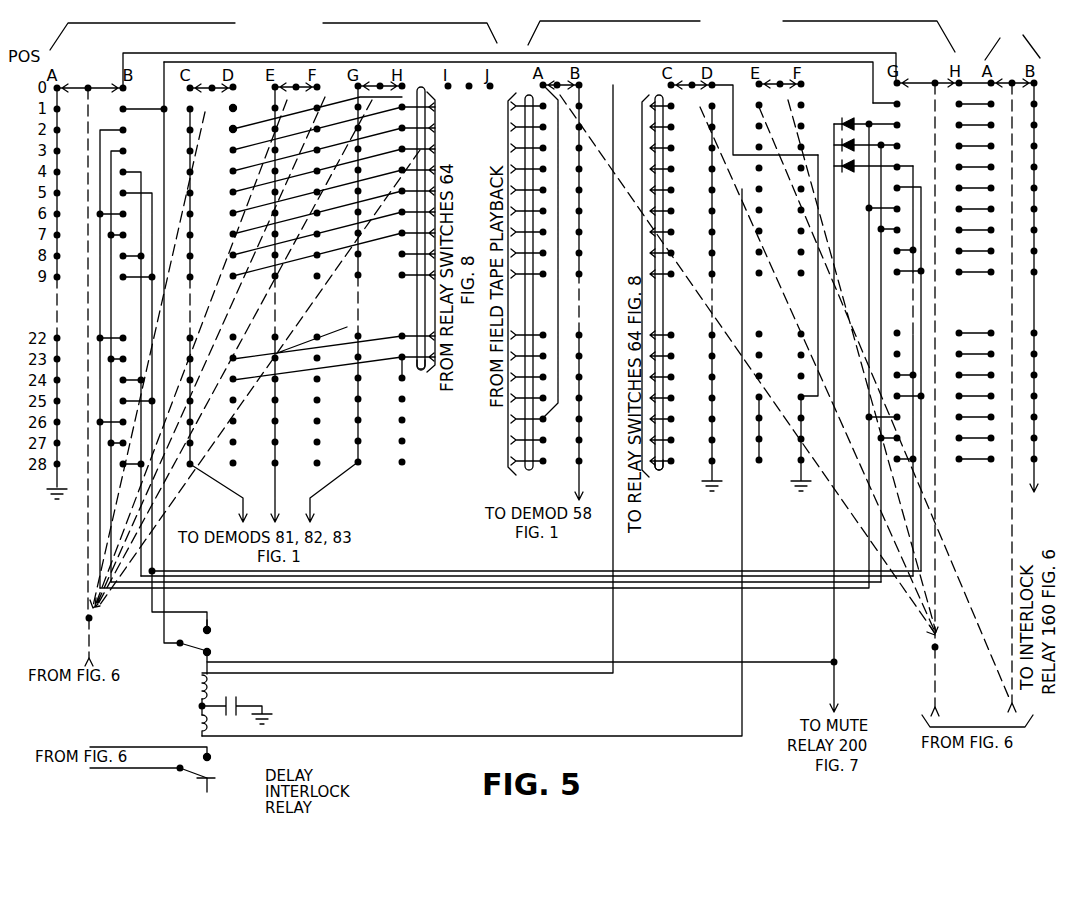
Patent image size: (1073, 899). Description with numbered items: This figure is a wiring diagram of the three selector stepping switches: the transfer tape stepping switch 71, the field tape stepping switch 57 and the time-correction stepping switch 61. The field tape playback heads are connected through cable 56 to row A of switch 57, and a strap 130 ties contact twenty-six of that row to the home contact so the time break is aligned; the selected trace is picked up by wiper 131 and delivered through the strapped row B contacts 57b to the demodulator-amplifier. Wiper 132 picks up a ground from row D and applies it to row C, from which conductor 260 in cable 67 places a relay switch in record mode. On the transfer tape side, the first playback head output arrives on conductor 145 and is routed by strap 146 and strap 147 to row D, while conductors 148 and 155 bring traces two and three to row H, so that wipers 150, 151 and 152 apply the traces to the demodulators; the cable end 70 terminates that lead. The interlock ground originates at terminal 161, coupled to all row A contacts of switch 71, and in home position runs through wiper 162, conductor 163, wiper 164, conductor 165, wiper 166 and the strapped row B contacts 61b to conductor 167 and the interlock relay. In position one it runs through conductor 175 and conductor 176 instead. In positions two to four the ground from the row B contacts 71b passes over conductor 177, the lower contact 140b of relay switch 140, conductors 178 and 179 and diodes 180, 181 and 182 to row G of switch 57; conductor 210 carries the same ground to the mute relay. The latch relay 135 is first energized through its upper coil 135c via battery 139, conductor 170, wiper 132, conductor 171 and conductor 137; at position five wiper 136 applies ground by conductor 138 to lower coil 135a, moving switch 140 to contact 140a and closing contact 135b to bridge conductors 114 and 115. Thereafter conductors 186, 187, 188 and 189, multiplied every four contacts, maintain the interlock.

The transfer tape stepping switch 71 is at (273, 32).
The field tape stepping switch 57 is at (741, 32).
The time-correction stepping switch 61 is at (1012, 30).
The wiper 162 is at (81, 86).
The contact 71-B 71b is at (89, 644).
The wiper 150 is at (210, 86).
The conductor 163 is at (240, 54).
The wiper 151 is at (291, 85).
The wiper 152 is at (383, 84).
The conductor 175 is at (397, 62).
The conductor 177 is at (165, 160).
The strap 146 is at (240, 120).
The strap 147 is at (203, 117).
The conductor 145 is at (410, 95).
The cable end 70 is at (421, 372).
The conductor 148 is at (422, 110).
The conductor 155 is at (425, 130).
The wiper 131 is at (557, 83).
The strap 130 is at (556, 286).
The cable 56 is at (531, 471).
The conductor 260 is at (659, 93).
The cable 67 is at (661, 471).
The wiper 132 is at (692, 83).
The conductor 171 is at (733, 135).
The conductor 137 is at (819, 300).
The wiper 136 is at (778, 82).
The wiper 164 is at (917, 80).
The conductor 165 is at (975, 82).
The wiper 166 is at (1012, 80).
The contact 61-B 61b is at (1013, 704).
The contact 57-B 57b is at (936, 679).
The conductor 176 is at (978, 103).
The diode 180 is at (849, 118).
The diode 181 is at (855, 153).
The diode 182 is at (866, 208).
The conductor 179 is at (878, 233).
The conductor 167 is at (1030, 486).
The conductor 189 is at (378, 571).
The conductor 188 is at (430, 576).
The conductor 187 is at (398, 583).
The conductor 186 is at (456, 589).
The fixed contact 140a is at (208, 636).
The movable contact 140 is at (214, 647).
The fixed contact 140b is at (209, 652).
The conductor 178 is at (660, 661).
The conductor 170 is at (362, 676).
The conductor 138 is at (432, 736).
The relay coil 135c is at (196, 681).
The latch relay 135 is at (178, 714).
The operating coil 135a is at (196, 726).
The battery 139 is at (249, 702).
The conductor 114 is at (126, 747).
The fixed contact 135b is at (208, 758).
The conductor 115 is at (126, 770).
The conductor 210 is at (834, 681).
The terminal 161 is at (55, 490).